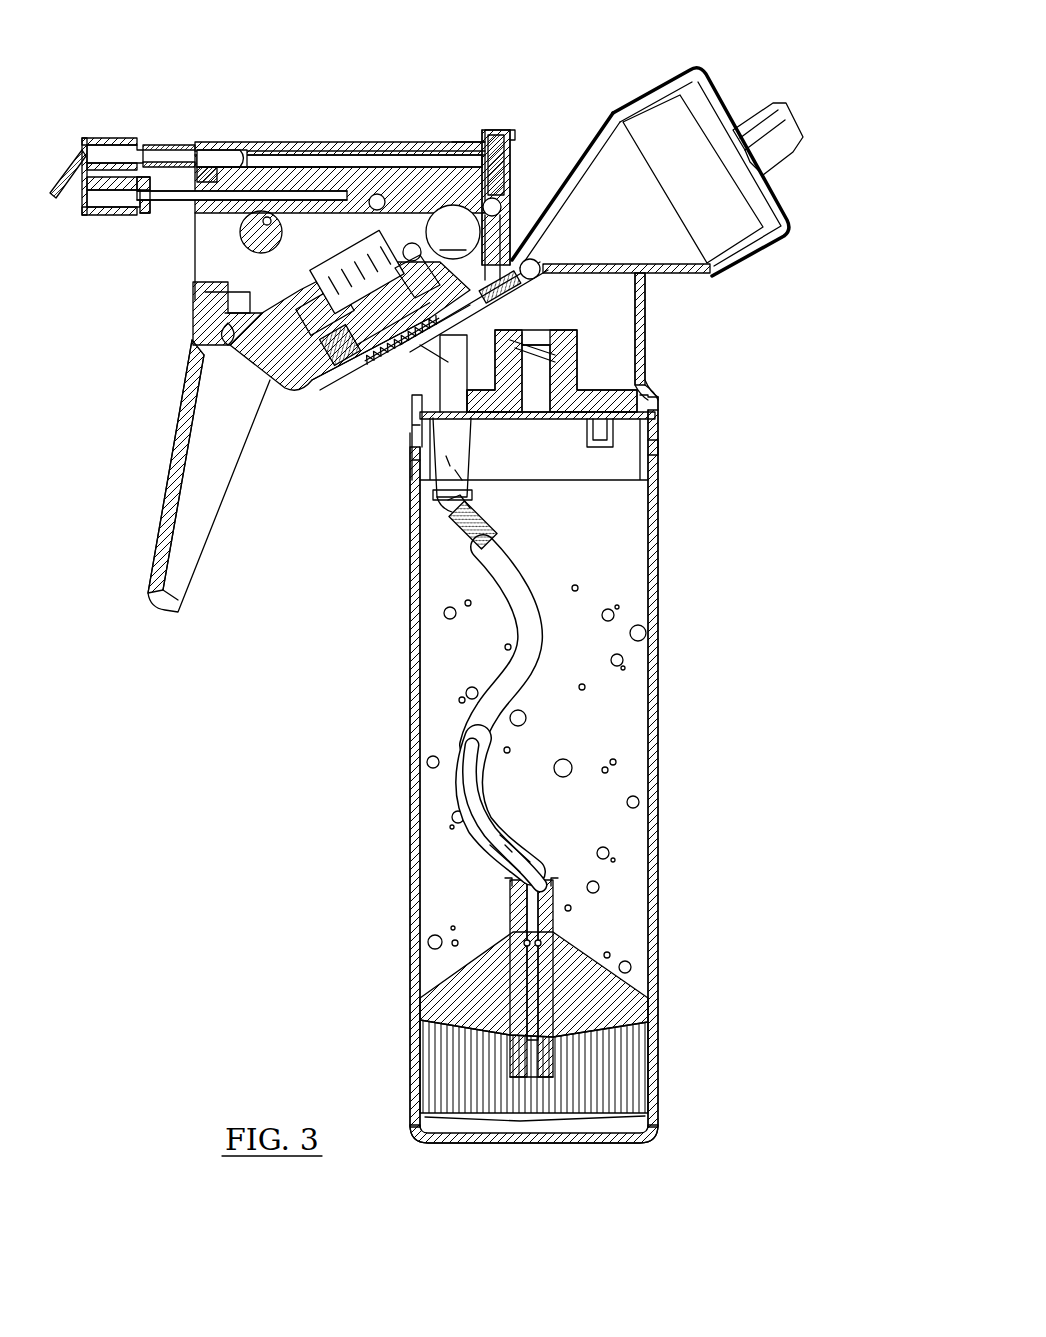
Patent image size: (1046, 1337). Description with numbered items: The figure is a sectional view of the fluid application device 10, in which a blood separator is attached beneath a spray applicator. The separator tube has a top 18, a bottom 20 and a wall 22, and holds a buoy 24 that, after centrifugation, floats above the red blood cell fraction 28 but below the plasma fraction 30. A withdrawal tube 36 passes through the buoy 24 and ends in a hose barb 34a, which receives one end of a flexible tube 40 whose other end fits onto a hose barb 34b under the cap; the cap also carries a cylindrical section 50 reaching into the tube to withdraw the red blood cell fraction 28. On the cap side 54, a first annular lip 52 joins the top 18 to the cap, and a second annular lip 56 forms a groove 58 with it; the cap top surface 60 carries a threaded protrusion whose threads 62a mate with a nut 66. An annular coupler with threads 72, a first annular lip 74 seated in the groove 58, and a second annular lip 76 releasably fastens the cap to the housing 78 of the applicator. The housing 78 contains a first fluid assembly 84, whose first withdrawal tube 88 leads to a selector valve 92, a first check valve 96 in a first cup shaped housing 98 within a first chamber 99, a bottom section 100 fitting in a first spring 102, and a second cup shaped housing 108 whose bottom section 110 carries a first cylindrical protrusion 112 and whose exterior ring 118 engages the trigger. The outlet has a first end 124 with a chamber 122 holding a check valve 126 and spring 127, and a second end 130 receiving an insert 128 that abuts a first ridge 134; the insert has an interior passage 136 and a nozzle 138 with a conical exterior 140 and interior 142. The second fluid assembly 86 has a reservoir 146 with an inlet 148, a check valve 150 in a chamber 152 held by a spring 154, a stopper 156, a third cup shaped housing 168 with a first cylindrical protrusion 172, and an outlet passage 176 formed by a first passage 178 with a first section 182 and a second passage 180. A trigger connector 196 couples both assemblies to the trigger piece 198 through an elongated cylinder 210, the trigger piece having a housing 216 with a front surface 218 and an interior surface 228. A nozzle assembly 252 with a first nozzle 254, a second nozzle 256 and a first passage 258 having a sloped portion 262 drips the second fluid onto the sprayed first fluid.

The fluid application device 10 is at (838, 432).
The top 18 is at (658, 470).
The bottom 20 is at (610, 1143).
The wall 22 is at (658, 676).
The buoy 24 is at (640, 998).
The red blood cell fraction 28 is at (640, 1040).
The plasma fraction 30 is at (630, 876).
The hose barb 34a is at (520, 868).
The hose barb 34b is at (458, 532).
The withdrawal tube 36 is at (512, 900).
The tube 40 is at (510, 657).
The cylindrical section 50 is at (468, 492).
The first annular lip 52 is at (412, 462).
The side 54 is at (412, 492).
The second annular lip 56 is at (655, 416).
The groove 58 is at (658, 450).
The top surface 60 is at (437, 428).
The threads 62a is at (555, 355).
The nut 66 is at (577, 378).
The threads 72 is at (655, 395).
The first annular lip 74 is at (412, 437).
The second annular lip 76 is at (650, 390).
The housing 78 is at (645, 322).
The first fluid assembly 84 is at (314, 254).
The second fluid assembly 86 is at (578, 215).
The first withdrawal tube 88 is at (458, 395).
The selector valve 92 is at (496, 135).
The first check valve 96 is at (430, 210).
The first cup shaped housing 98 is at (340, 190).
The first chamber 99 is at (418, 298).
The bottom section 100 is at (348, 235).
The first spring 102 is at (215, 338).
The second cup shaped housing 108 is at (345, 385).
The bottom section 110 is at (291, 395).
The first cylindrical protrusion 112 is at (318, 330).
The exterior ring 118 is at (205, 298).
The chamber 122 is at (378, 194).
The first end 124 is at (453, 205).
The check valve 126 is at (365, 200).
The spring 127 is at (292, 160).
The insert 128 is at (260, 167).
The second end 130 is at (222, 150).
The first ridge 134 is at (200, 214).
The interior passage 136 is at (172, 191).
The nozzle 138 is at (200, 167).
The exterior 140 is at (170, 150).
The interior 142 is at (148, 205).
The reservoir 146 is at (760, 212).
The inlet 148 is at (770, 104).
The check valve 150 is at (560, 268).
The chamber 152 is at (548, 262).
The spring 154 is at (640, 288).
The stopper 156 is at (525, 302).
The third cup shaped housing 168 is at (380, 355).
The first cylindrical protrusion 172 is at (348, 365).
The outlet passage 176 is at (472, 140).
The first passage 178 is at (515, 170).
The second passage 180 is at (440, 142).
The first section 182 is at (502, 220).
The trigger connector 196 is at (280, 398).
The trigger piece 198 is at (132, 586).
The elongated cylinder 210 is at (200, 375).
The housing 216 is at (150, 440).
The front surface 218 is at (160, 525).
The interior surface 228 is at (190, 550).
The nozzle assembly 252 is at (80, 102).
The first nozzle 254 is at (113, 138).
The second nozzle 256 is at (110, 215).
The first passage 258 is at (60, 180).
The sloped portion 262 is at (72, 200).